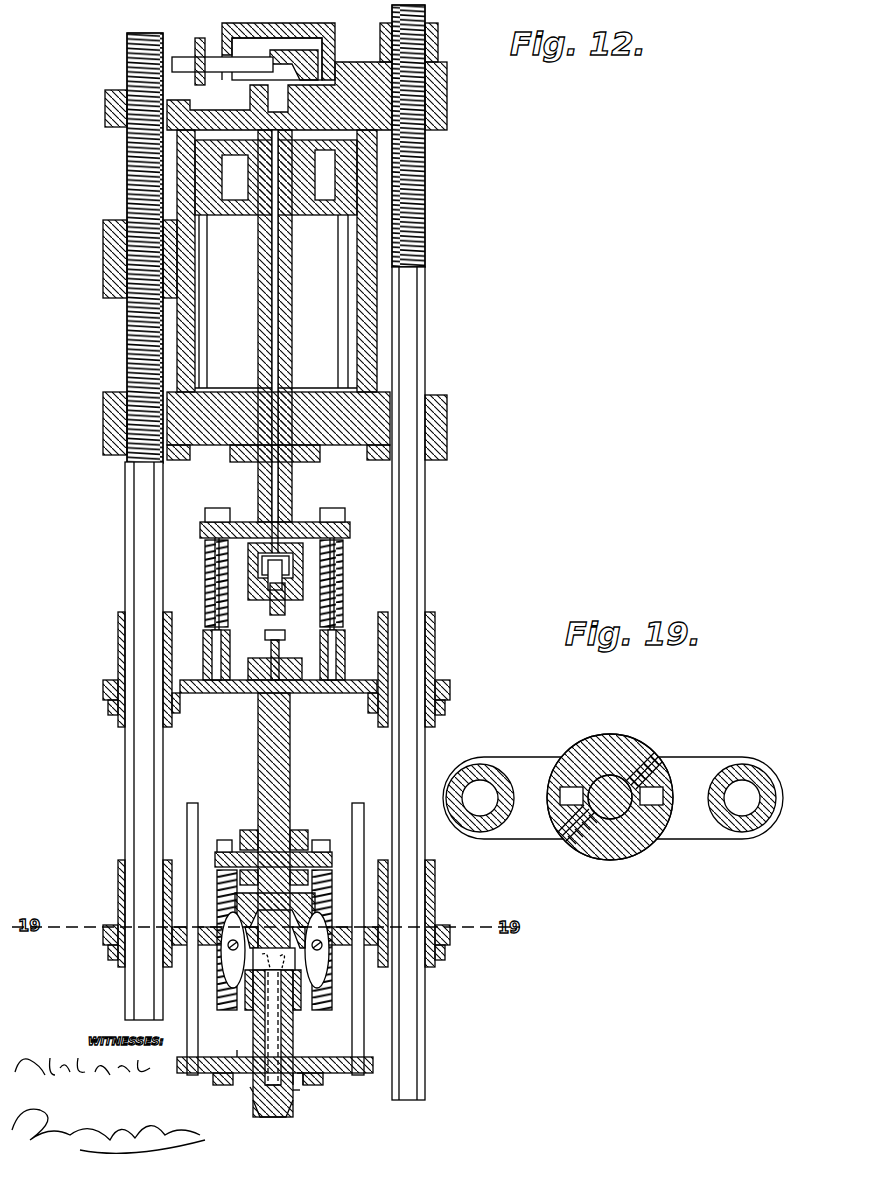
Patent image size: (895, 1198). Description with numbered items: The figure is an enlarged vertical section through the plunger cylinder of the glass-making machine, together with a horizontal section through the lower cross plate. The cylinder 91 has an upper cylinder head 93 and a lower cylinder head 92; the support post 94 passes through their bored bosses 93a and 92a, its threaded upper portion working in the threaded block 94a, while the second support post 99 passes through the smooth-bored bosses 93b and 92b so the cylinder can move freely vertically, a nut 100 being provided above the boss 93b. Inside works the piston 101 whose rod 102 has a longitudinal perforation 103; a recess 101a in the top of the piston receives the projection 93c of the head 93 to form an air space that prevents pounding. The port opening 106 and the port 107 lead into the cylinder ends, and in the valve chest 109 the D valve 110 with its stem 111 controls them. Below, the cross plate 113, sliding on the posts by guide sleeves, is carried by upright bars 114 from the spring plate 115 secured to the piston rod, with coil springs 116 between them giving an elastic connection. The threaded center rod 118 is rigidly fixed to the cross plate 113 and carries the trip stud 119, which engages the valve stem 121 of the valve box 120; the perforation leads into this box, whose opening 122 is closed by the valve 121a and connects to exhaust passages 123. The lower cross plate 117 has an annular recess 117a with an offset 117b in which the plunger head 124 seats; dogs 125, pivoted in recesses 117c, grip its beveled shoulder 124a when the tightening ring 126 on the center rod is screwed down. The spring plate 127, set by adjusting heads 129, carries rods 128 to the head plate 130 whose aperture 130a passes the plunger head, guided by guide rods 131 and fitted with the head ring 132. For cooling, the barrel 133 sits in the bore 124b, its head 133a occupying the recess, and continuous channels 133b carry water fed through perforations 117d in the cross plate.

In FIG. 12, the cylinder 91 is at (372, 318).
In FIG. 12, the cylinder head 92 is at (207, 428).
In FIG. 12, the bored boss 92a is at (115, 457).
In FIG. 12, the boss 92b is at (446, 438).
In FIG. 12, the cylinder head 93 is at (338, 122).
In FIG. 12, the bored boss 93a is at (112, 127).
In FIG. 12, the boss 93b is at (437, 127).
In FIG. 12, the projection 93c is at (323, 175).
In FIG. 12, the support post 94 is at (130, 542).
In FIG. 19, the support post 94 is at (483, 793).
In FIG. 12, the threaded block 94a is at (115, 298).
In FIG. 12, the support post 99 is at (427, 497).
In FIG. 19, the support post 99 is at (742, 793).
In FIG. 12, the nut 100 is at (430, 50).
In FIG. 12, the piston 101 is at (325, 212).
In FIG. 12, the recess 101a is at (250, 145).
In FIG. 12, the piston rod 102 is at (292, 306).
In FIG. 12, the longitudinal perforation 103 is at (276, 348).
In FIG. 12, the port opening 106 is at (140, 80).
In FIG. 12, the port 107 is at (303, 108).
In FIG. 12, the valve chest 109 is at (322, 60).
In FIG. 12, the D valve 110 is at (275, 52).
In FIG. 12, the valve stem 111 is at (183, 62).
In FIG. 12, the cross plate 113 is at (103, 688).
In FIG. 12, the upright bars 114 is at (207, 587).
In FIG. 12, the spring plate 115 is at (310, 525).
In FIG. 12, the coil springs 116 is at (207, 552).
In FIG. 12, the cross plate 117 is at (190, 835).
In FIG. 19, the cross plate 117 is at (521, 836).
In FIG. 12, the annular recess 117a is at (230, 968).
In FIG. 19, the annular recess 117a is at (614, 777).
In FIG. 12, the offset 117b is at (310, 1005).
In FIG. 12, the recesses 117c is at (330, 922).
In FIG. 19, the recesses 117c is at (662, 760).
In FIG. 19, the perforations 117d is at (596, 835).
In FIG. 12, the threaded center rod 118 is at (262, 736).
In FIG. 12, the trip stud 119 is at (280, 648).
In FIG. 12, the valve box 120 is at (305, 556).
In FIG. 12, the valve stem 121 is at (265, 572).
In FIG. 12, the valve 121a is at (205, 607).
In FIG. 12, the opening 122 is at (290, 592).
In FIG. 12, the exhaust passages 123 is at (290, 587).
In FIG. 12, the plunger head 124 is at (258, 1078).
In FIG. 12, the beveled shoulder 124a is at (303, 1075).
In FIG. 12, the bore 124b is at (292, 1110).
In FIG. 12, the dogs 125 is at (303, 972).
In FIG. 12, the tightening ring 126 is at (332, 895).
In FIG. 12, the spring plate 127 is at (337, 830).
In FIG. 12, the rods 128 is at (330, 882).
In FIG. 12, the adjusting heads 129 is at (240, 830).
In FIG. 12, the head plate 130 is at (373, 1065).
In FIG. 12, the aperture 130a is at (310, 1100).
In FIG. 12, the guide rods 131 is at (358, 822).
In FIG. 12, the head ring 132 is at (322, 1080).
In FIG. 12, the barrel 133 is at (265, 1090).
In FIG. 12, the head 133a is at (230, 1050).
In FIG. 19, the head 133a is at (603, 763).
In FIG. 12, the continuous channels 133b is at (250, 1087).
In FIG. 19, the continuous channels 133b is at (651, 832).